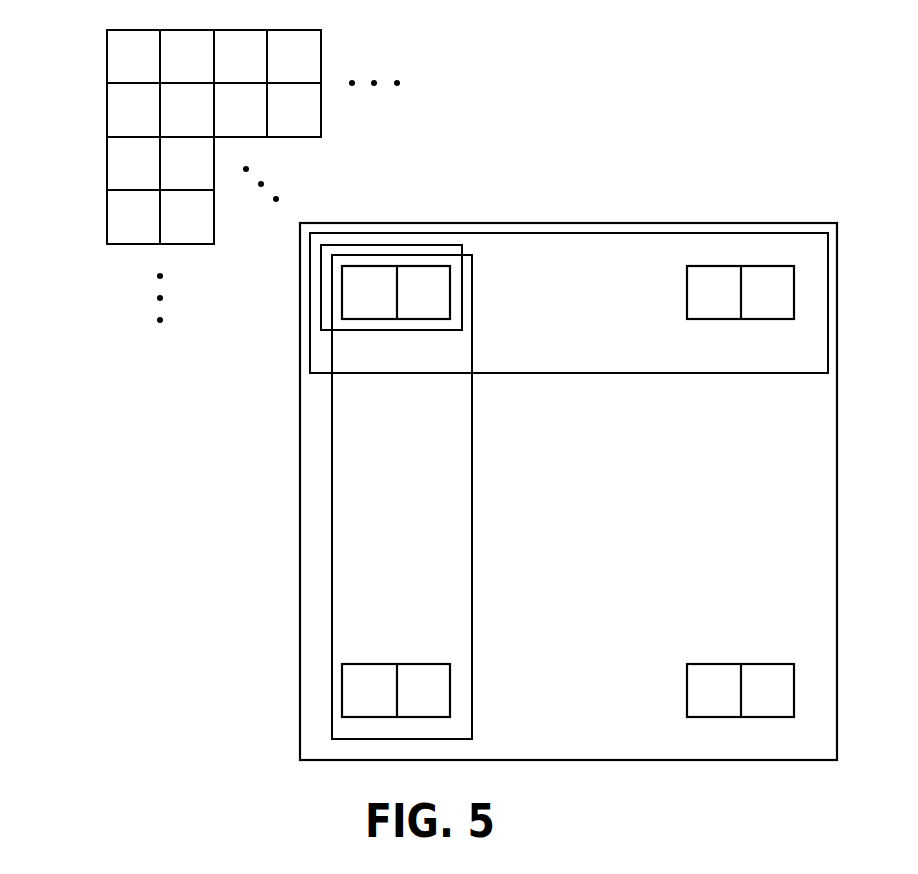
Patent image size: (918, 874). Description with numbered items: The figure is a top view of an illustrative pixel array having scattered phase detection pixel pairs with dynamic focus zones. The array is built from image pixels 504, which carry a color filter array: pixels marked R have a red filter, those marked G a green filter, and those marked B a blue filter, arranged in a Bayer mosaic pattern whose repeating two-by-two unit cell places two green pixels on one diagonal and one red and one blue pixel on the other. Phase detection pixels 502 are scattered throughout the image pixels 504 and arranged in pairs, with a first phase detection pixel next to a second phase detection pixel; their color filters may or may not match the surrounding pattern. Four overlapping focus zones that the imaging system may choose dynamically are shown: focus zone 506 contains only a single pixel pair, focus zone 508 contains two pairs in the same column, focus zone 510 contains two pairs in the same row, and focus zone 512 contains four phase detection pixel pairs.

The phase detection pixels 502 is at (768, 313).
The image pixels 504 is at (133, 34).
The focus zone 506 is at (417, 245).
The focus zone 508 is at (473, 488).
The focus zone 510 is at (632, 373).
The focus zone 512 is at (670, 223).